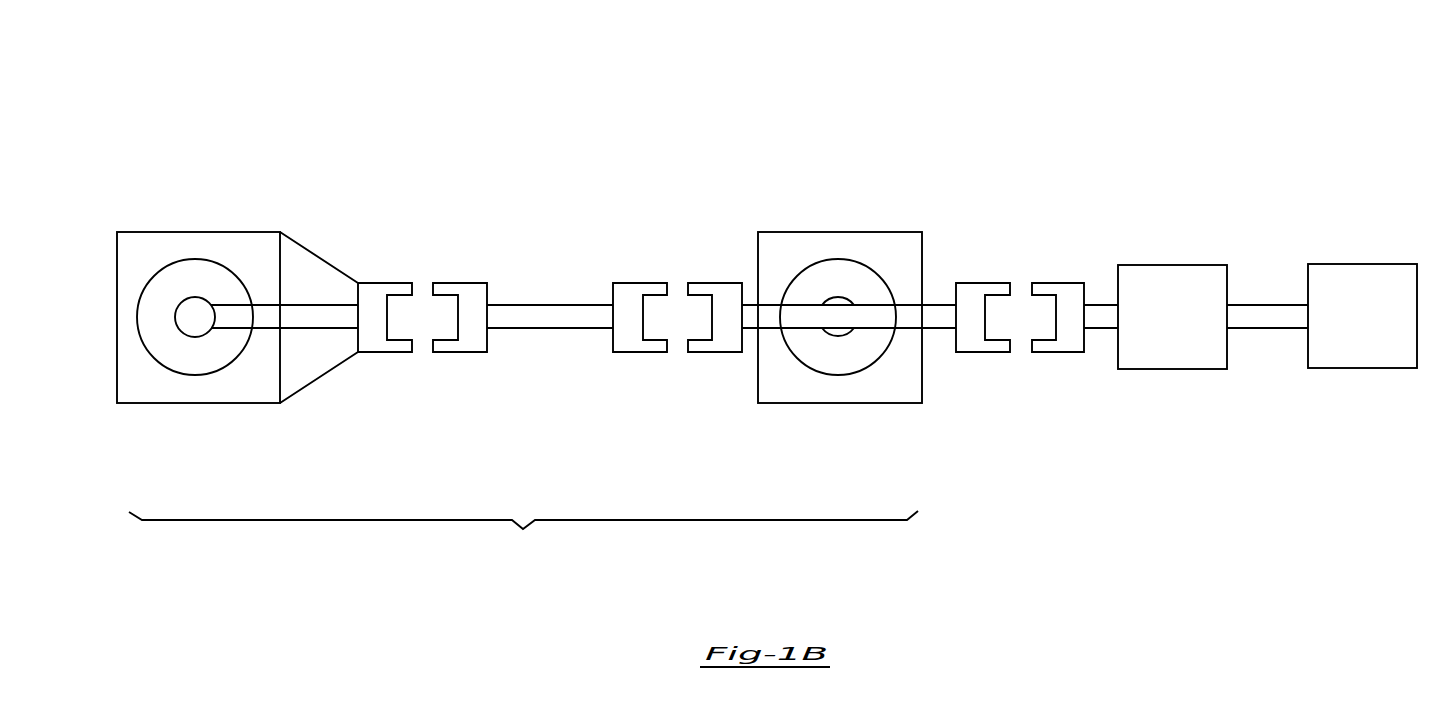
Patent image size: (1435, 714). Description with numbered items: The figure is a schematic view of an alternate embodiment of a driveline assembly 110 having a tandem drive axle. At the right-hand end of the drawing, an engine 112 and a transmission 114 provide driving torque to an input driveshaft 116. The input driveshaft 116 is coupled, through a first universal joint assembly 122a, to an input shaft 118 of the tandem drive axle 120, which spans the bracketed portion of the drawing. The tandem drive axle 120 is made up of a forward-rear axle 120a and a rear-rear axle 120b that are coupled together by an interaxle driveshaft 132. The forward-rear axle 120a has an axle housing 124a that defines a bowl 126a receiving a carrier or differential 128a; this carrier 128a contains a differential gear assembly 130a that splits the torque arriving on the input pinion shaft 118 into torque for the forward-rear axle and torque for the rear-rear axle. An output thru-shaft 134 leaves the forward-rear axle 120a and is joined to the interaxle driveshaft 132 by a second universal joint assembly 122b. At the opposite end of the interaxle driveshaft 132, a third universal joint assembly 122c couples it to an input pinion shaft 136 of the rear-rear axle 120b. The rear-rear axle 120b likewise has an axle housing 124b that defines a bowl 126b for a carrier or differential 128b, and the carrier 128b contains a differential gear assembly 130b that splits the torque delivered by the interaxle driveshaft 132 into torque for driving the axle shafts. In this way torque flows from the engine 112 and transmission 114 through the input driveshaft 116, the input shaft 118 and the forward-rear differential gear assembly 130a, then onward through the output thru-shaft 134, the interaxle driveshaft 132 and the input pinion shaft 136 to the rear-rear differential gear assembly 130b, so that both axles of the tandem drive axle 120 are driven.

The driveline assembly 110 is at (950, 115).
The engine 112 is at (1377, 327).
The transmission 114 is at (1180, 327).
The input driveshaft 116 is at (1098, 312).
The input shaft 118 is at (945, 322).
The tandem drive axle 120 is at (523, 535).
The forward-rear axle 120a is at (822, 307).
The rear-rear axle 120b is at (222, 293).
The first universal joint assembly 122a is at (988, 254).
The second universal joint assembly 122b is at (645, 262).
The third universal joint assembly 122c is at (418, 372).
The axle housing 124a is at (888, 240).
The axle housing 124b is at (248, 240).
The bowl 126a is at (808, 353).
The bowl 126b is at (198, 367).
The carrier 128a is at (826, 388).
The carrier 128b is at (167, 247).
The differential gear assembly 130a is at (838, 306).
The differential gear assembly 130b is at (185, 322).
The interaxle driveshaft 132 is at (548, 312).
The output thru-shaft 134 is at (750, 312).
The input pinion shaft 136 is at (318, 315).